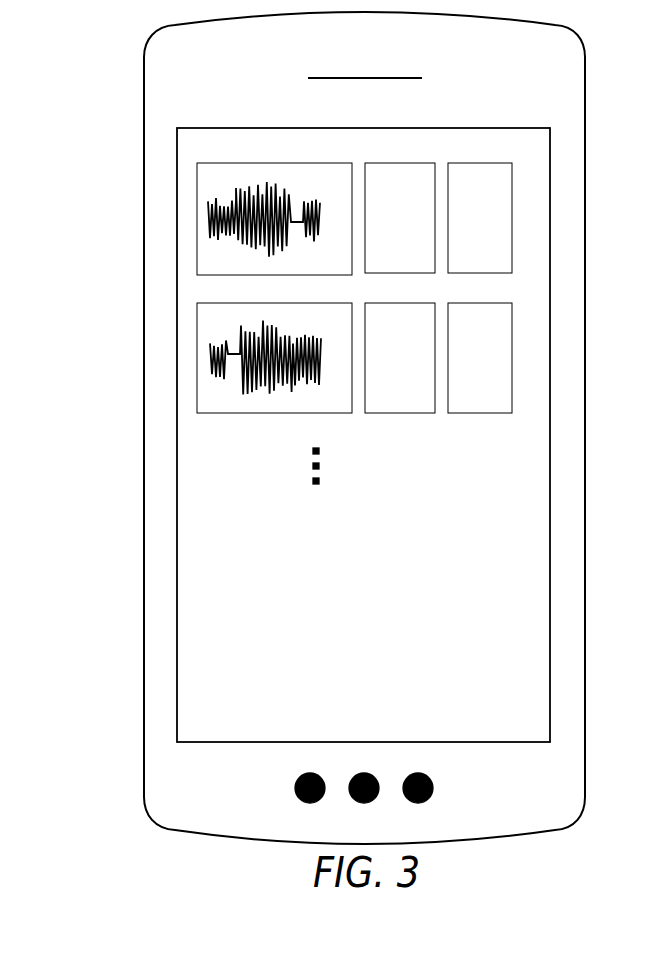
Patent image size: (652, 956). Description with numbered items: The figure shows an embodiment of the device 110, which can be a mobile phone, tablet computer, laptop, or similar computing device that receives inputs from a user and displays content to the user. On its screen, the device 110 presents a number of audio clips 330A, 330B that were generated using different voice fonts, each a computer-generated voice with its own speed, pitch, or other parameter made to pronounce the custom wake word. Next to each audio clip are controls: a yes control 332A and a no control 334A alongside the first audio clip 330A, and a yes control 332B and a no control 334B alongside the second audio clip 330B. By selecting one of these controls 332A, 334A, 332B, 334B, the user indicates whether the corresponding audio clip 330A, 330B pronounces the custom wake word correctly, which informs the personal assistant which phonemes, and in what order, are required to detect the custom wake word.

The device 110 is at (585, 78).
The audio clip 330A is at (197, 220).
The audio clip 330B is at (197, 350).
The control 332A is at (378, 164).
The control 334A is at (462, 164).
The control 332B is at (378, 304).
The control 334B is at (462, 304).